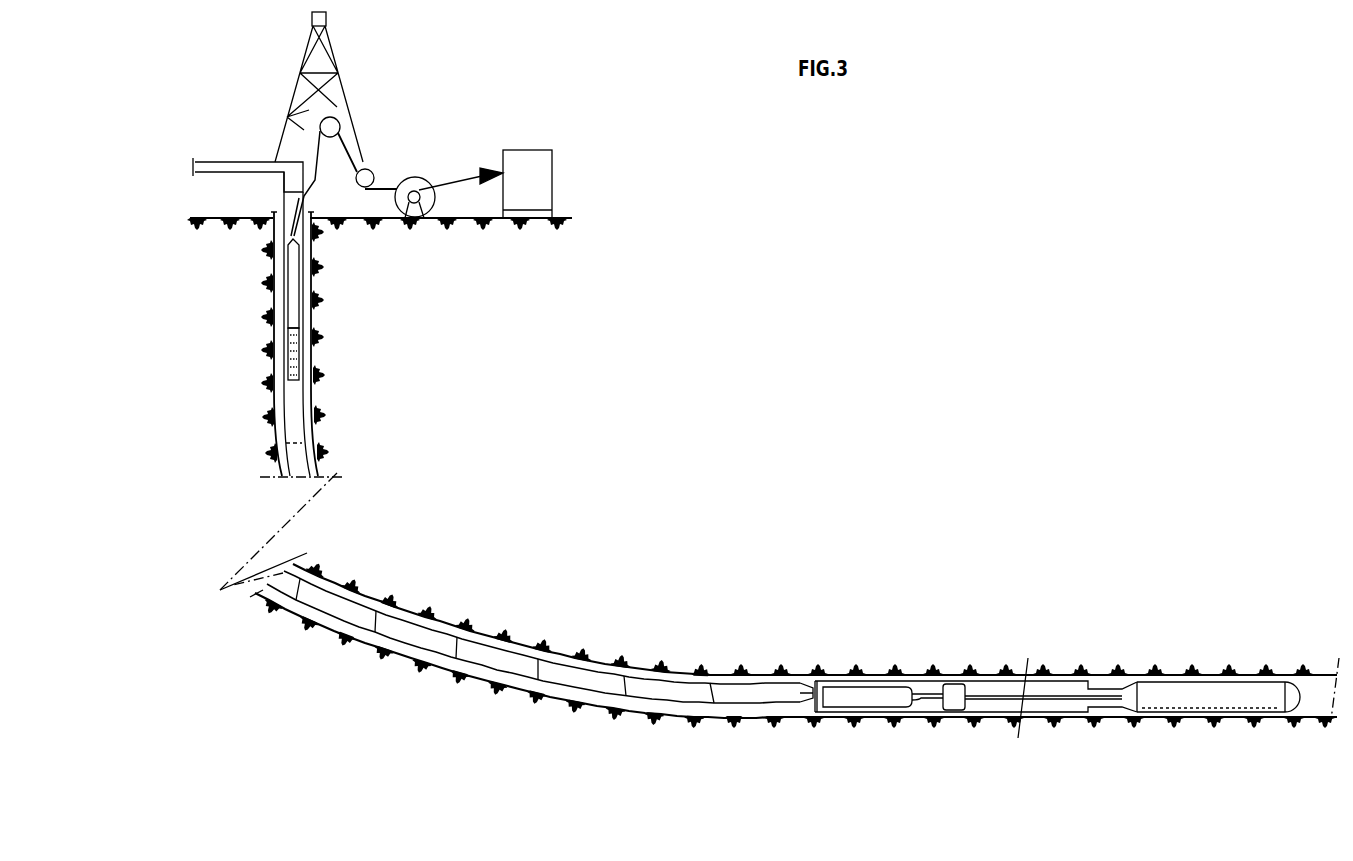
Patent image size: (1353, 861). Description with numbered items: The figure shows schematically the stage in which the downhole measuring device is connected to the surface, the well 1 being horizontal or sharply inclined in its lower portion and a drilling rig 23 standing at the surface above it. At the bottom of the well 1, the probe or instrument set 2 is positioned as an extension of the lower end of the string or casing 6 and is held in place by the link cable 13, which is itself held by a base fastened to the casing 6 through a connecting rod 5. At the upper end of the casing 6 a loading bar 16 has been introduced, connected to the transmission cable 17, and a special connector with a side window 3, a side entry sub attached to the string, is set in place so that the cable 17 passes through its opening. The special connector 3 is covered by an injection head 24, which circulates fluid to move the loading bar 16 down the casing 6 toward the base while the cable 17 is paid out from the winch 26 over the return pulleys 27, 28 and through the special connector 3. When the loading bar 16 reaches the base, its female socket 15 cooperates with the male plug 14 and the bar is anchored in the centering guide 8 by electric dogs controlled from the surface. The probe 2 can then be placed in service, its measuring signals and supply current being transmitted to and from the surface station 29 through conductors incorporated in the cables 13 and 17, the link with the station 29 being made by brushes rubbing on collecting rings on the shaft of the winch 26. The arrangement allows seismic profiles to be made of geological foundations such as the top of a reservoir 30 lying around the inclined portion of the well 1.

The borehole 1 is at (1308, 705).
The probe or instrument set 2 is at (1194, 688).
The special connector with a side window 3 is at (288, 199).
The connecting rod 5 is at (1078, 677).
The string or casing 6 is at (851, 680).
The centering guide 8 is at (864, 687).
The link cable 13 is at (1019, 695).
The male plug 14 is at (912, 692).
The female socket 15 is at (300, 355).
The loading bar 16 is at (300, 289).
The transmission cable 17 is at (349, 150).
The drilling rig 23 is at (261, 75).
The injection head 24 is at (247, 163).
The winch 26 is at (419, 181).
The return pulley 27 is at (373, 175).
The return pulley 28 is at (334, 124).
The surface station 29 is at (514, 160).
The top of a reservoir 30 is at (474, 172).